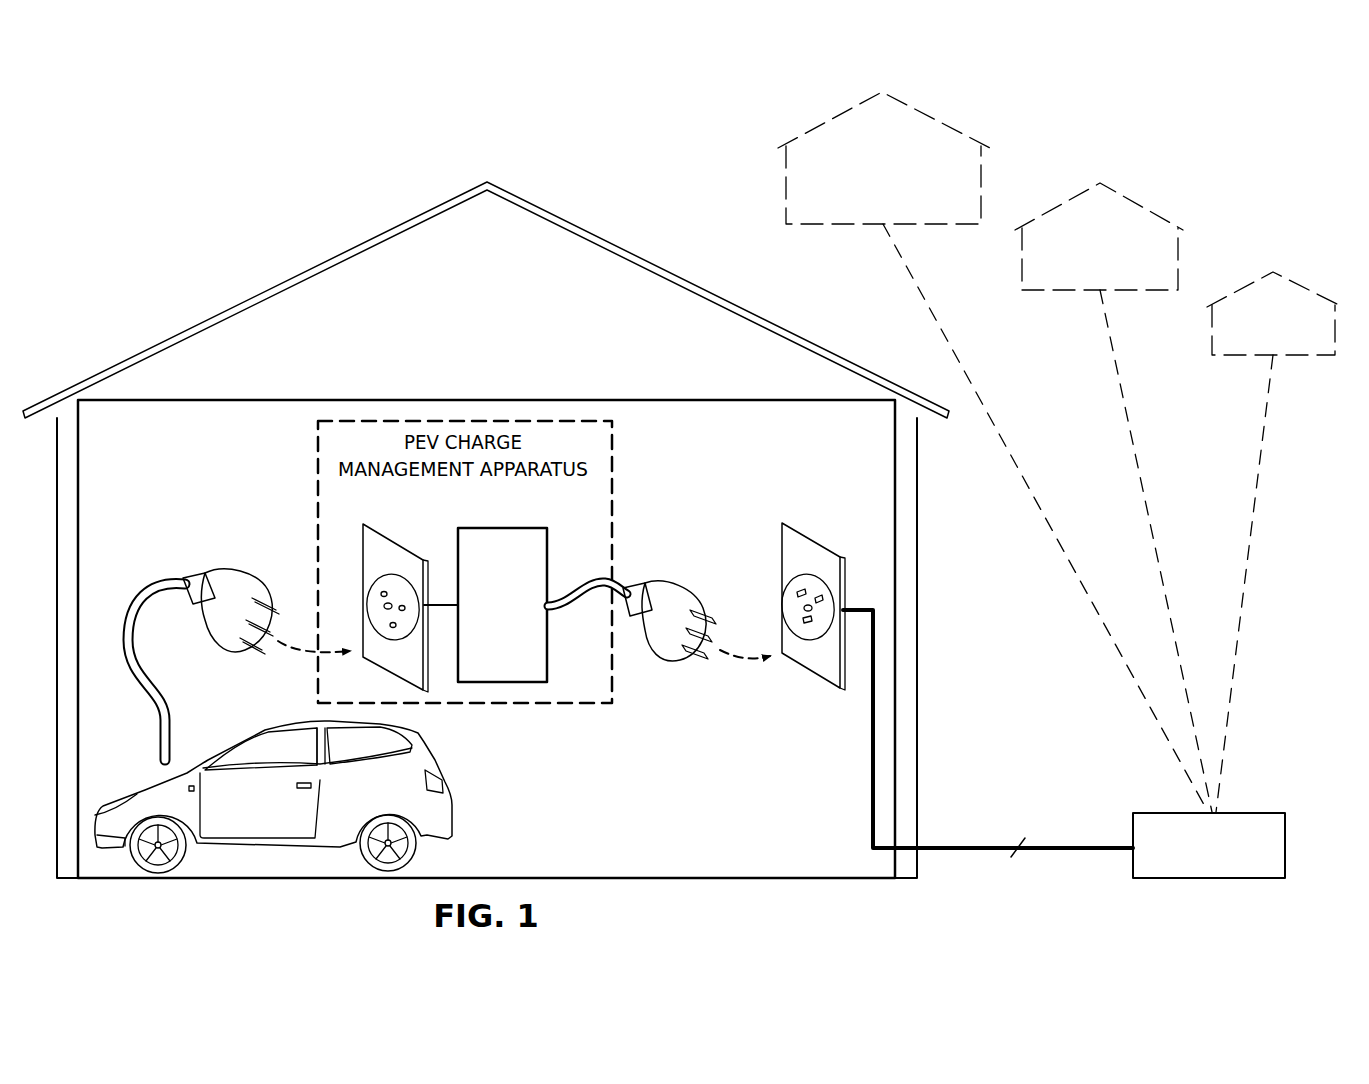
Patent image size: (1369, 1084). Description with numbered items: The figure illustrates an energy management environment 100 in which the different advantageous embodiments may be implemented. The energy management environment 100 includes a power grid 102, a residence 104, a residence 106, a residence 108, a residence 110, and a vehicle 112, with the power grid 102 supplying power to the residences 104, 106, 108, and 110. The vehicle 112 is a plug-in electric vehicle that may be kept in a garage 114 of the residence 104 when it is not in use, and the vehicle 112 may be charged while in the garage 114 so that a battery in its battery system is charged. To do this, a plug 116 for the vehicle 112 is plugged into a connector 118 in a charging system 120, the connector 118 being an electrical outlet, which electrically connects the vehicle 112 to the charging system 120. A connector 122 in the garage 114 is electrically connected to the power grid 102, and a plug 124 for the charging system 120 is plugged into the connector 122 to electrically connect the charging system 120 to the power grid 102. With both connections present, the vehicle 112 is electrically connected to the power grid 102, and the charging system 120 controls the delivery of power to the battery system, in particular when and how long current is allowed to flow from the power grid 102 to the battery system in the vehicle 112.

The energy management environment 100 is at (370, 128).
The power grid 102 is at (1243, 880).
The residence 104 is at (263, 293).
The residence 106 is at (927, 120).
The residence 108 is at (1145, 210).
The residence 110 is at (1307, 288).
The vehicle 112 is at (452, 785).
The garage 114 is at (658, 807).
The plug 116 is at (237, 590).
The connector 118 is at (397, 540).
The charging system 120 is at (480, 619).
The connector 122 is at (810, 667).
The plug 124 is at (680, 597).